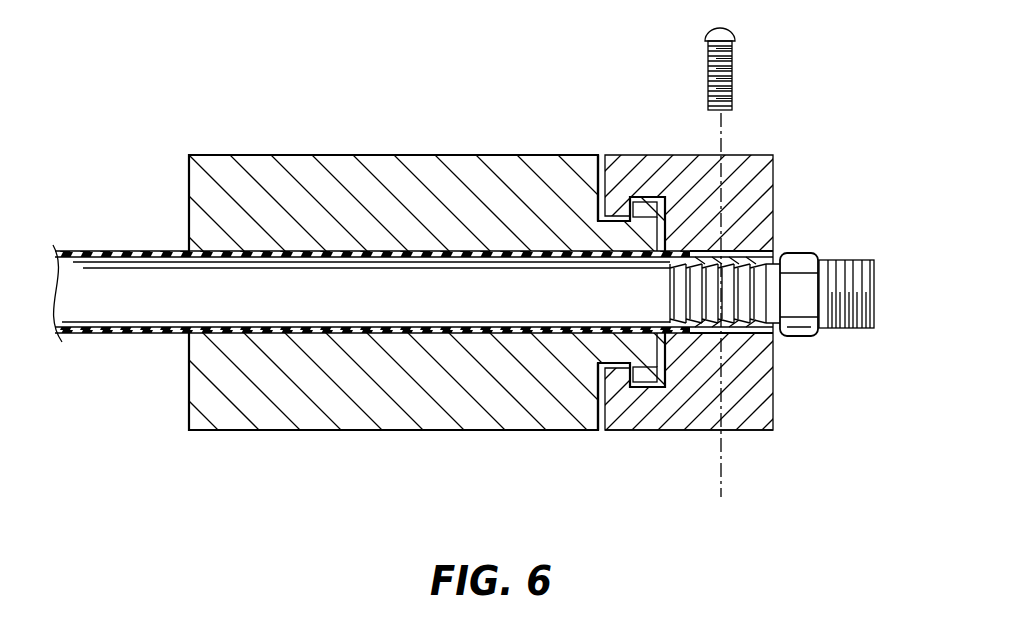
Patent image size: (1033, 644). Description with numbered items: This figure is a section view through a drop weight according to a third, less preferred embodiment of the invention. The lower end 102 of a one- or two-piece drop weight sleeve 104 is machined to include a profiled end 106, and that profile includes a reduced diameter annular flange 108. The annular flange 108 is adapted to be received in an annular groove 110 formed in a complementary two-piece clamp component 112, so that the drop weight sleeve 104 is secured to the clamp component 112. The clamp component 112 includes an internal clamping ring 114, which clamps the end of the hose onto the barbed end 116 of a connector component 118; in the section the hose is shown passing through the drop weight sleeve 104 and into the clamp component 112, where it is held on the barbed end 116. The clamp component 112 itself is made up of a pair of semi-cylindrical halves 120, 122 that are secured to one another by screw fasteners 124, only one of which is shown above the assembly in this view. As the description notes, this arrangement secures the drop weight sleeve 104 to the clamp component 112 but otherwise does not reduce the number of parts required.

The lower end 102 is at (583, 410).
The drop weight sleeve 104 is at (436, 149).
The profiled end 106 is at (616, 237).
The reduced diameter annular flange 108 is at (650, 378).
The annular groove 110 is at (652, 213).
The clamp component 112 is at (690, 440).
The internal clamping ring 114 is at (724, 252).
The barbed end 116 is at (740, 300).
The connector component 118 is at (852, 247).
The semi-cylindrical half 120 is at (750, 162).
The semi-cylindrical half 122 is at (748, 403).
The screw fastener 124 is at (733, 75).